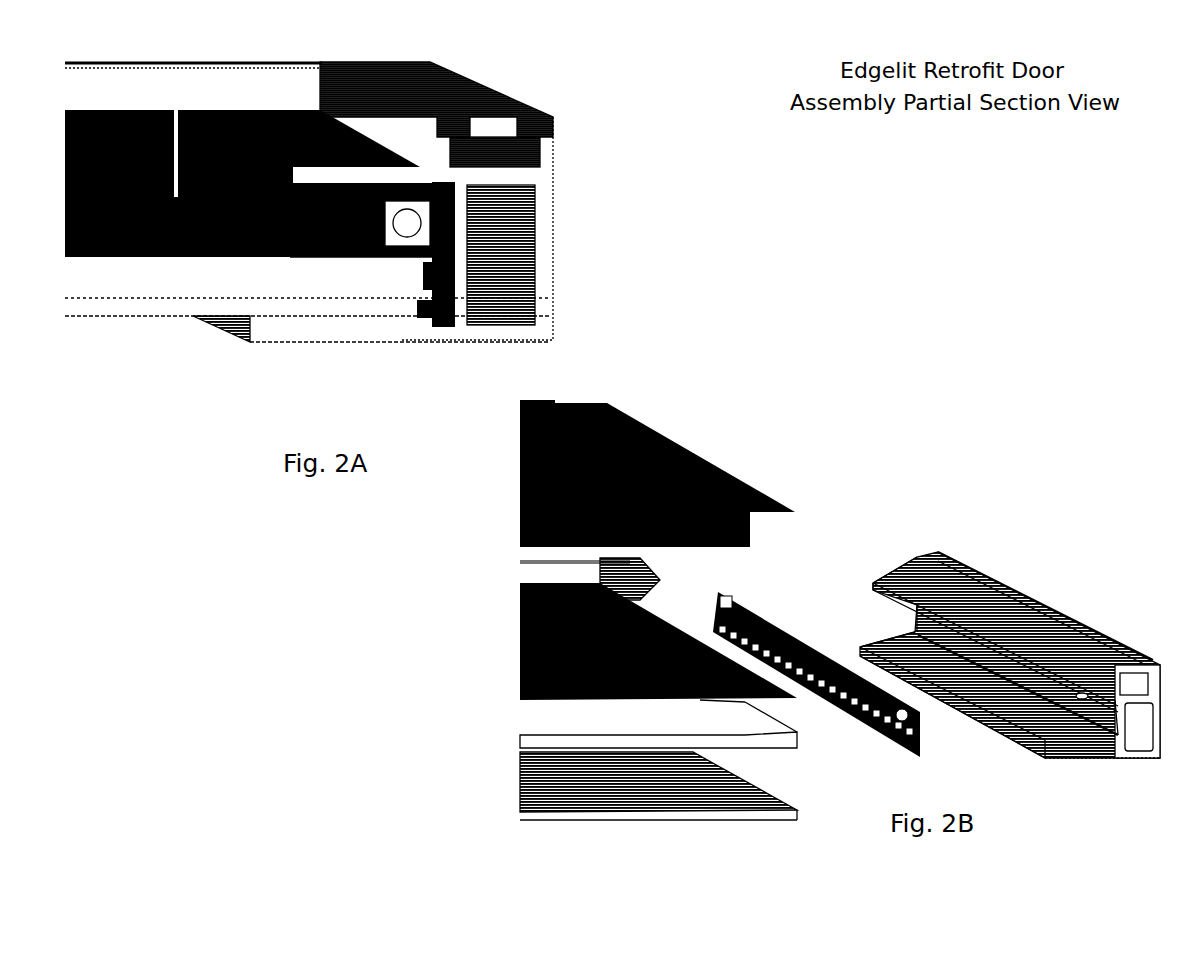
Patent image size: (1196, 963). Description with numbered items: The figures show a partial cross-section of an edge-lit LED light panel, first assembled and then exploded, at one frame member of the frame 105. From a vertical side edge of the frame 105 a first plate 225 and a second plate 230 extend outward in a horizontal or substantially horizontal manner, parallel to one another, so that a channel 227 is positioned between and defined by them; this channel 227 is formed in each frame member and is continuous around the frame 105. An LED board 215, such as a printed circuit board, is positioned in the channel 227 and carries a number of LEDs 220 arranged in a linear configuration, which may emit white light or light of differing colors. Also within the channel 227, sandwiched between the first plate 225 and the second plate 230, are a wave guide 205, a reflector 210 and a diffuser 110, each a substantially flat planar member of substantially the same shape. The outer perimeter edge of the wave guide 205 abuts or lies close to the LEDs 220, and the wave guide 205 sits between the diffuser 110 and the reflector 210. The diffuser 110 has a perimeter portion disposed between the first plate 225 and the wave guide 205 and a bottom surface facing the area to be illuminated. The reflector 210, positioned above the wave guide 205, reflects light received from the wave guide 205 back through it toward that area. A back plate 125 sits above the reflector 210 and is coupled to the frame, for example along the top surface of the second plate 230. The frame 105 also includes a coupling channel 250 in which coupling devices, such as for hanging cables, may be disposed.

In FIG. 2A, the frame 105 is at (553, 200).
In FIG. 2B, the frame 105 is at (1045, 452).
In FIG. 2A, the diffuser 110 is at (315, 314).
In FIG. 2B, the diffuser 110 is at (558, 793).
In FIG. 2A, the back plate 125 is at (363, 137).
In FIG. 2B, the back plate 125 is at (708, 452).
In FIG. 2A, the wave guide 205 is at (167, 286).
In FIG. 2B, the wave guide 205 is at (545, 722).
In FIG. 2A, the reflector 210 is at (371, 259).
In FIG. 2B, the reflector 210 is at (520, 630).
In FIG. 2A, the LED board 215 is at (455, 255).
In FIG. 2B, the LED board 215 is at (895, 450).
In FIG. 2A, the LEDs 220 is at (435, 286).
In FIG. 2B, the LEDs 220 is at (858, 712).
In FIG. 2A, the first plate 225 is at (412, 333).
In FIG. 2B, the first plate 225 is at (1062, 752).
In FIG. 2A, the channel 227 is at (453, 180).
In FIG. 2B, the channel 227 is at (1005, 697).
In FIG. 2A, the second plate 230 is at (413, 180).
In FIG. 2B, the second plate 230 is at (895, 590).
In FIG. 2A, the coupling channel 250 is at (433, 100).
In FIG. 2B, the coupling channel 250 is at (1135, 686).